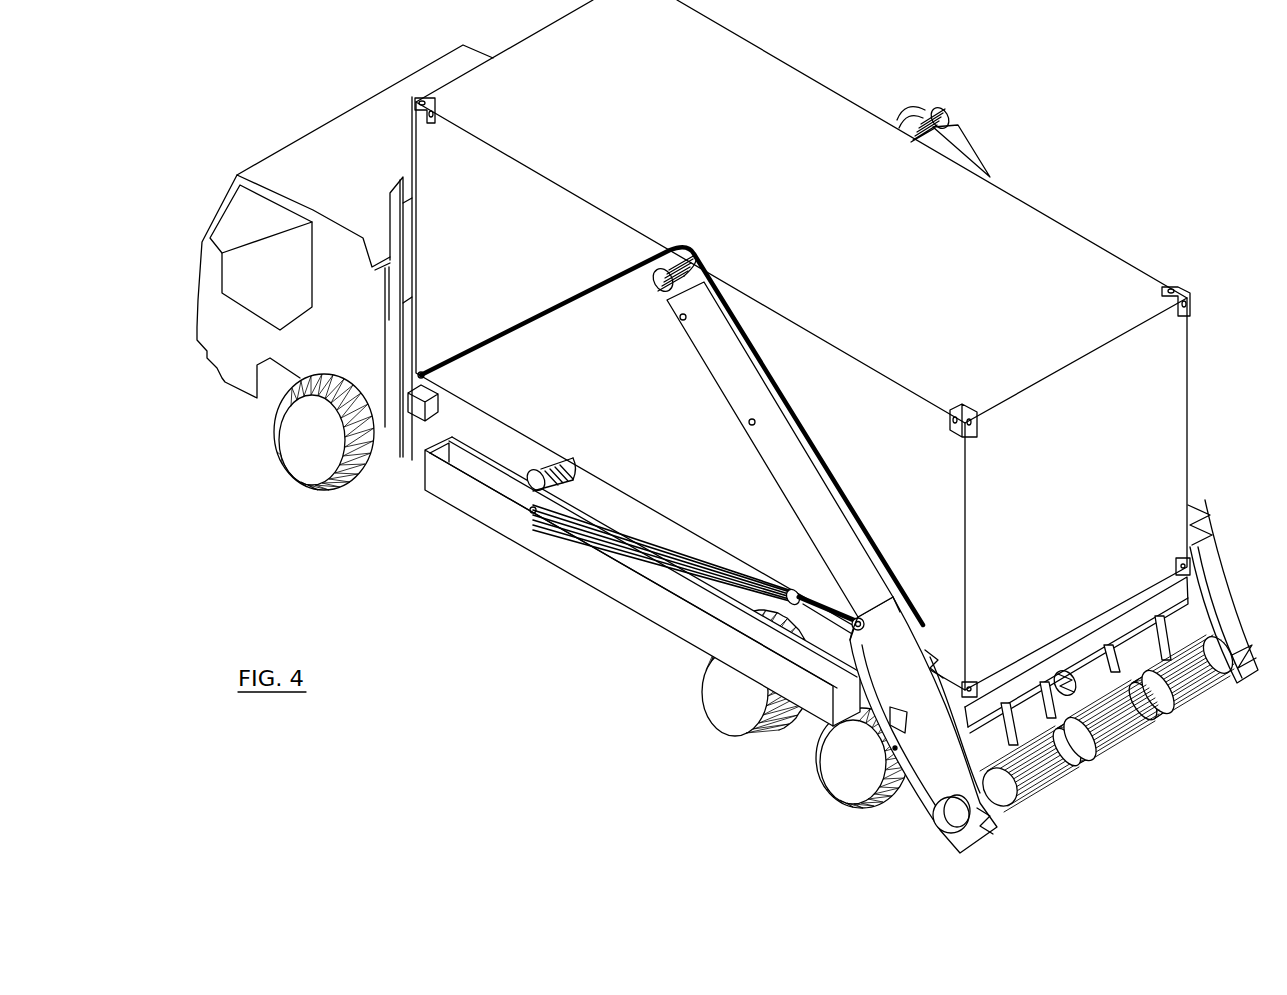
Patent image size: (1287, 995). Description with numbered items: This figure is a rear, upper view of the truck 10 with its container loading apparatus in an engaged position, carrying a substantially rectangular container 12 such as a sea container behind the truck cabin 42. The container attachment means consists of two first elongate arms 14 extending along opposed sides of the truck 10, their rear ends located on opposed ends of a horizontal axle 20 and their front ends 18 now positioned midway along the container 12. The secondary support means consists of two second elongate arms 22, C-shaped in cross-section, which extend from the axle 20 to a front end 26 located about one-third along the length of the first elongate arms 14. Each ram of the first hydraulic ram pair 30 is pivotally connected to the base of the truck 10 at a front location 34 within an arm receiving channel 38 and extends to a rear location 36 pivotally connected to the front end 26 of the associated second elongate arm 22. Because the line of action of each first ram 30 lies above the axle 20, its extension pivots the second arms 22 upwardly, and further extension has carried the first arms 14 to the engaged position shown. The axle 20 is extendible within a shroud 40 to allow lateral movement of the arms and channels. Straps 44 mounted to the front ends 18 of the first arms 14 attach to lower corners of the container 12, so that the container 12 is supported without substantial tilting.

The truck 10 is at (262, 80).
The container 12 is at (782, 70).
The first elongate arms 14 is at (732, 392).
The front end of first elongate arm 18 is at (690, 250).
The horizontal axle 20 is at (1005, 787).
The second elongate arms 22 is at (1195, 618).
The front end of second elongate arm 26 is at (872, 637).
The first hydraulic ram pair 30 is at (622, 555).
The front location 34 is at (528, 515).
The rear location 36 is at (866, 617).
The arm receiving channel 38 is at (440, 487).
The shroud 40 is at (1123, 742).
The truck cabin 42 is at (422, 73).
The straps 44 is at (515, 330).